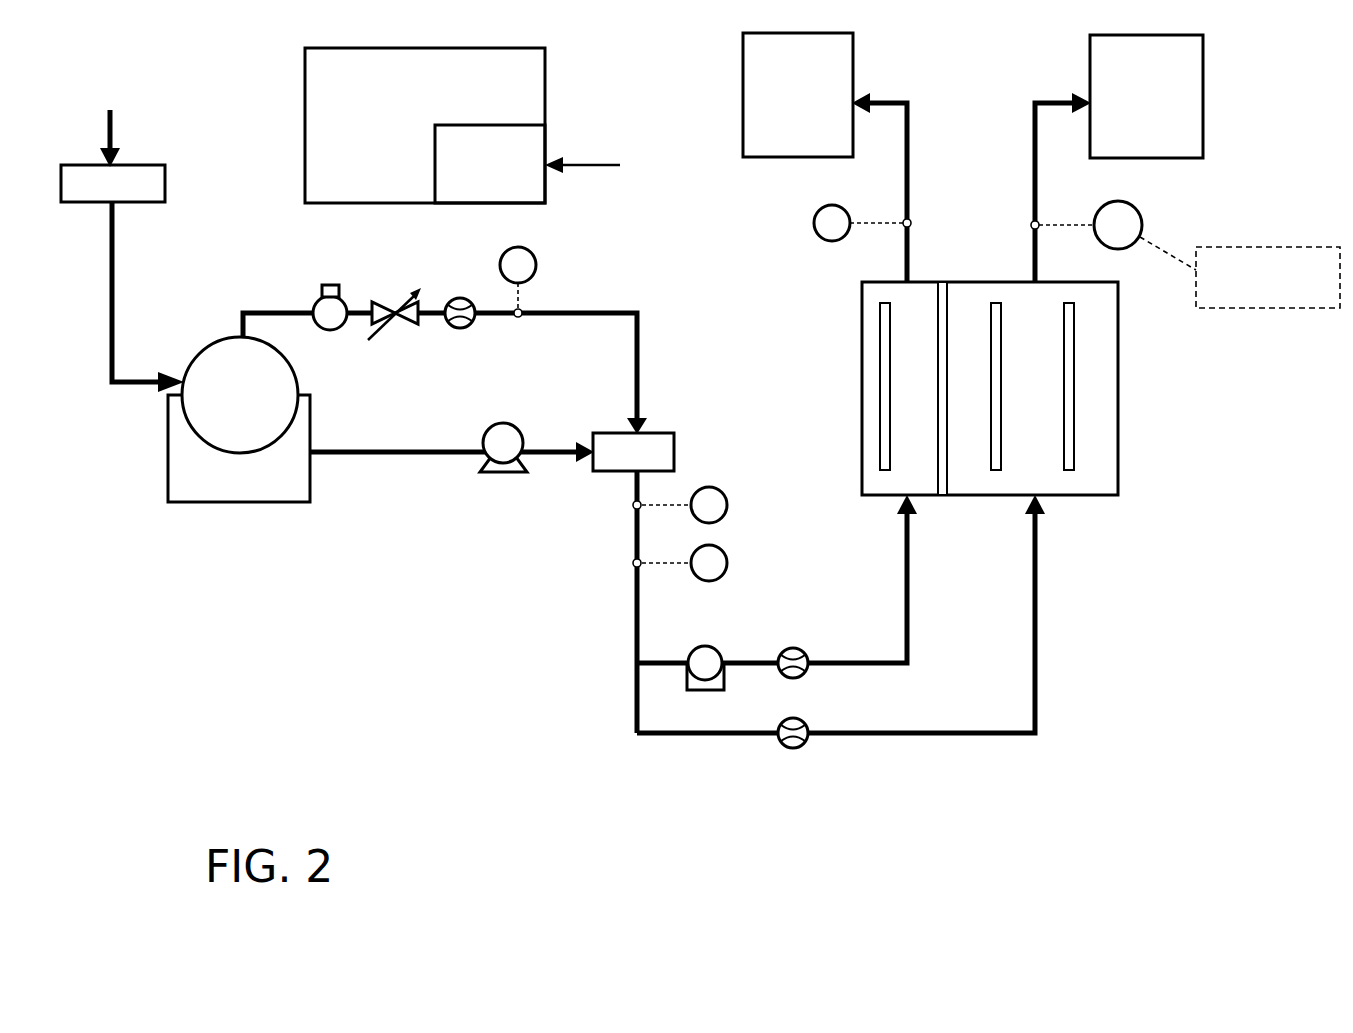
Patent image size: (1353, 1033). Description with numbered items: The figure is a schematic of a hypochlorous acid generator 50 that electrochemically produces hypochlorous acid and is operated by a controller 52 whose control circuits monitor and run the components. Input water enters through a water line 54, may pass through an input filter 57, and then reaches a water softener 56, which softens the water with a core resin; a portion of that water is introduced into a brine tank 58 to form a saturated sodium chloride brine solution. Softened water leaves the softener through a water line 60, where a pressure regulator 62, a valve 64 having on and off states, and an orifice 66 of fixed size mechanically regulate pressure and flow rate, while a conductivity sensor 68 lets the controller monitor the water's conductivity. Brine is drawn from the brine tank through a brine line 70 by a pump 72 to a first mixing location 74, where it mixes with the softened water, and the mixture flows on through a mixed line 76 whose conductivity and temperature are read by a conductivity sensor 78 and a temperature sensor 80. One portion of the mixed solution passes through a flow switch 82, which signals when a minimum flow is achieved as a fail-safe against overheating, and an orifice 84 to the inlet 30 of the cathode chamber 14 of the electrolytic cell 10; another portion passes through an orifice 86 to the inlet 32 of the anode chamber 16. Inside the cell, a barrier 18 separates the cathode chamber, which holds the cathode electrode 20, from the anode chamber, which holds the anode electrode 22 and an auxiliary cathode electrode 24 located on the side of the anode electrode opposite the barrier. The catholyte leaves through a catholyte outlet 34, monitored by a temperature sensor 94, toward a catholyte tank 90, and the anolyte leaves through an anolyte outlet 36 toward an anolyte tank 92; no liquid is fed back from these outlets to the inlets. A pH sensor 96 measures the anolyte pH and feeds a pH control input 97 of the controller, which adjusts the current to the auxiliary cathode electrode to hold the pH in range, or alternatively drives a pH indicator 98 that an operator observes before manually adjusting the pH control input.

The electrolytic cell 10 is at (842, 392).
The cathode chamber 14 is at (911, 390).
The anode chamber 16 is at (1029, 390).
The barrier 18 is at (948, 300).
The cathode electrode 20 is at (880, 323).
The anode electrode 22 is at (1001, 428).
The auxiliary cathode electrode 24 is at (1074, 322).
The inlet 30 is at (912, 545).
The inlet 32 is at (1040, 545).
The catholyte outlet 34 is at (907, 262).
The anolyte outlet 36 is at (1035, 262).
The hypochlorous acid generator 50 is at (372, 614).
The controller 52 is at (430, 48).
The water line 54 is at (112, 128).
The water softener 56 is at (203, 342).
The input filter 57 is at (165, 186).
The brine tank 58 is at (168, 445).
The water line 60 is at (272, 310).
The pressure regulator 62 is at (328, 284).
The valve 64 is at (406, 326).
The orifice 66 is at (467, 329).
The conductivity sensor 68 is at (537, 262).
The brine line 70 is at (420, 456).
The pump 72 is at (503, 424).
The first mixing location 74 is at (676, 450).
The mixed line 76 is at (635, 527).
The conductivity sensor 78 is at (727, 505).
The temperature sensor 80 is at (727, 563).
The flow switch 82 is at (704, 646).
The orifice 84 is at (793, 648).
The orifice 86 is at (793, 718).
The catholyte tank 90 is at (743, 63).
The anolyte tank 92 is at (1203, 70).
The temperature sensor 94 is at (816, 212).
The pH sensor 96 is at (1134, 205).
The pH control input 97 is at (605, 166).
The pH indicator 98 is at (1285, 247).